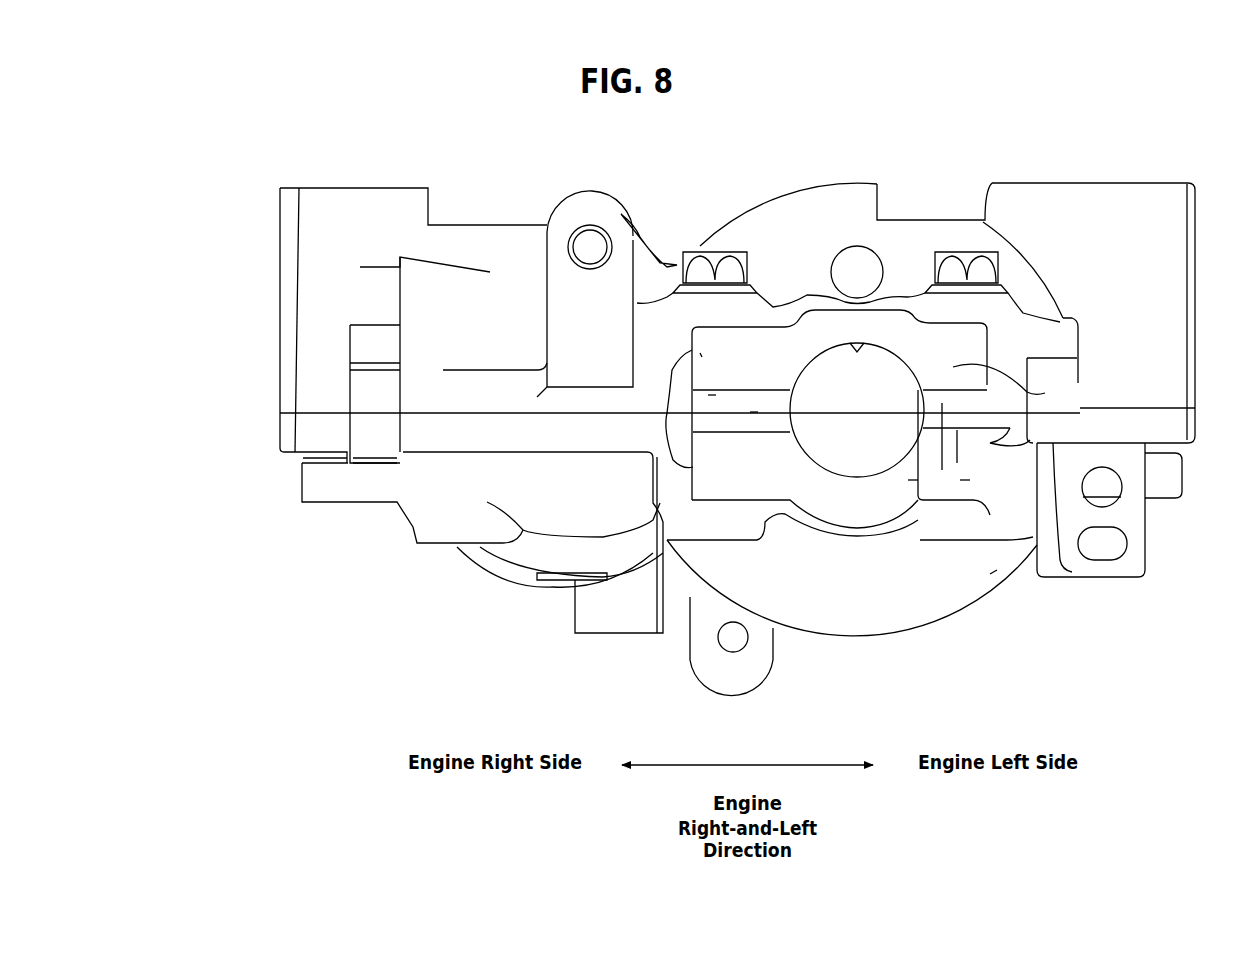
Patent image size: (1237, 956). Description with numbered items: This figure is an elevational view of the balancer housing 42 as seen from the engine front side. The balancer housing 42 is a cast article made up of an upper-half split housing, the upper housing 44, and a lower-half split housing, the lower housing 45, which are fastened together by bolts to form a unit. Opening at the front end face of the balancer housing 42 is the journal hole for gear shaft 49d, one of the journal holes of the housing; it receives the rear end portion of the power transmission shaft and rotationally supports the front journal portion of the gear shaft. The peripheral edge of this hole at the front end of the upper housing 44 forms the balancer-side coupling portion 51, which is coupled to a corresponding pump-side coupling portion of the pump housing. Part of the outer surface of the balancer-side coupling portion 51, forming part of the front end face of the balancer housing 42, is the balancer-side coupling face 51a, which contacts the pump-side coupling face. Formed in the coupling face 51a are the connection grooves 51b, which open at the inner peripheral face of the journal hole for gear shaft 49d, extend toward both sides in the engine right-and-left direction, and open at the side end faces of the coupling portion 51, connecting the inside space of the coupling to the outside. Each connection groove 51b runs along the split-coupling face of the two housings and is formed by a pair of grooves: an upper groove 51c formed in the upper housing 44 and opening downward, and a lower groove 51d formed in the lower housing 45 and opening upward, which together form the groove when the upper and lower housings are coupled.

The balancer housing 42 is at (309, 120).
The upper housing 44 is at (278, 277).
The lower housing 45 is at (277, 430).
The journal hole for gear shaft 49d is at (855, 343).
The balancer-side coupling portion 51 is at (663, 430).
The balancer-side coupling face 51a is at (1035, 410).
The connection grooves 51b is at (800, 355).
The upper groove 51c is at (712, 402).
The lower groove 51d is at (752, 420).